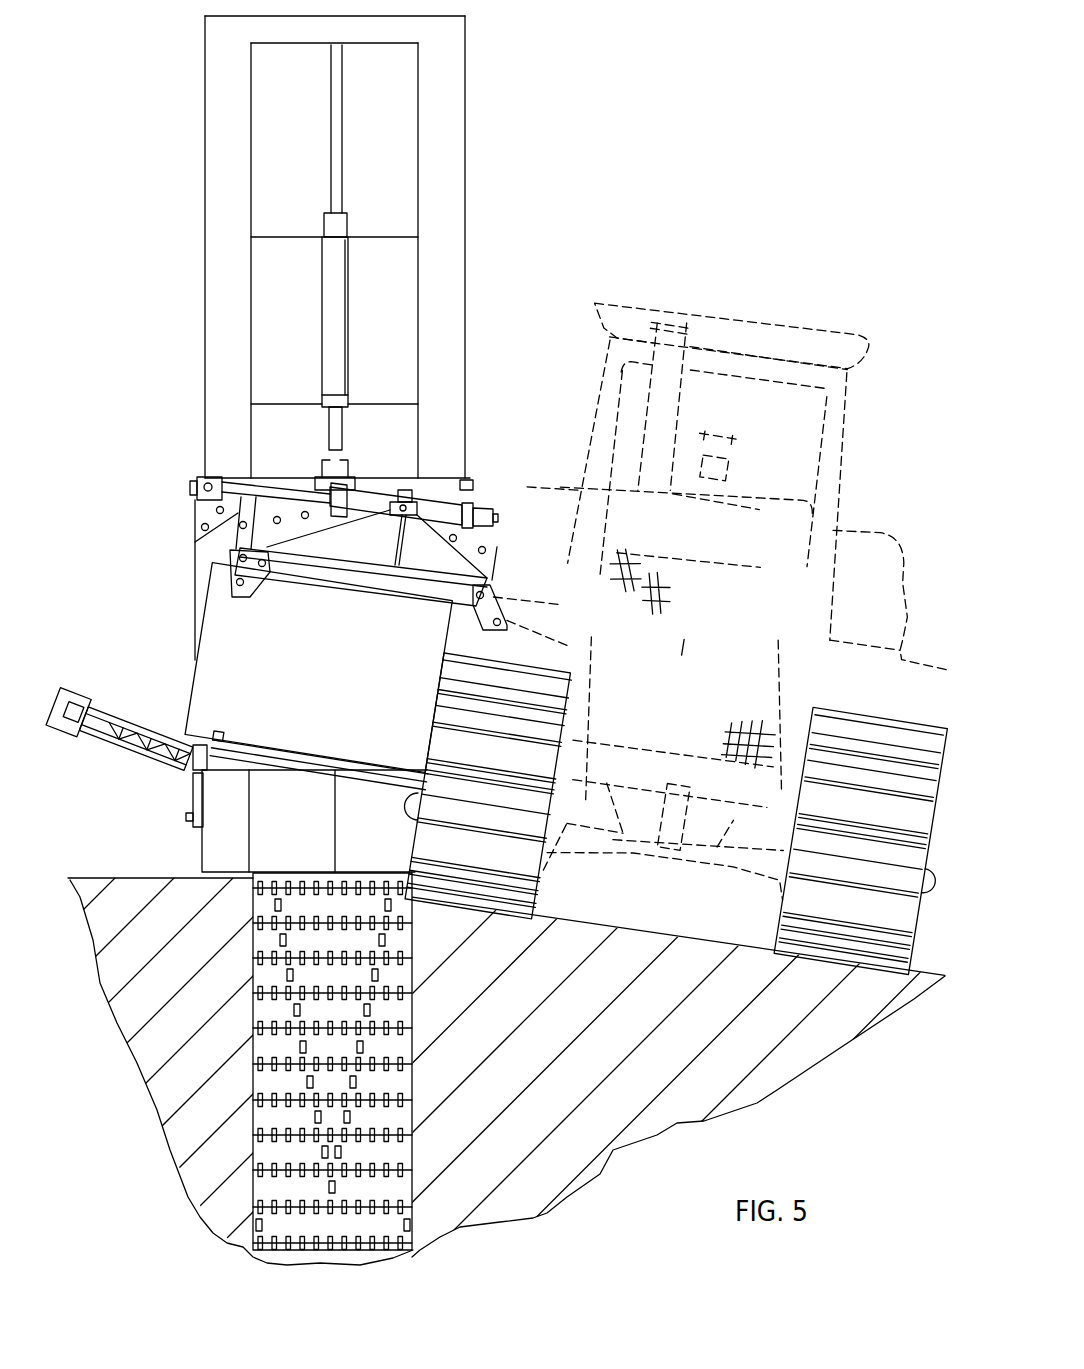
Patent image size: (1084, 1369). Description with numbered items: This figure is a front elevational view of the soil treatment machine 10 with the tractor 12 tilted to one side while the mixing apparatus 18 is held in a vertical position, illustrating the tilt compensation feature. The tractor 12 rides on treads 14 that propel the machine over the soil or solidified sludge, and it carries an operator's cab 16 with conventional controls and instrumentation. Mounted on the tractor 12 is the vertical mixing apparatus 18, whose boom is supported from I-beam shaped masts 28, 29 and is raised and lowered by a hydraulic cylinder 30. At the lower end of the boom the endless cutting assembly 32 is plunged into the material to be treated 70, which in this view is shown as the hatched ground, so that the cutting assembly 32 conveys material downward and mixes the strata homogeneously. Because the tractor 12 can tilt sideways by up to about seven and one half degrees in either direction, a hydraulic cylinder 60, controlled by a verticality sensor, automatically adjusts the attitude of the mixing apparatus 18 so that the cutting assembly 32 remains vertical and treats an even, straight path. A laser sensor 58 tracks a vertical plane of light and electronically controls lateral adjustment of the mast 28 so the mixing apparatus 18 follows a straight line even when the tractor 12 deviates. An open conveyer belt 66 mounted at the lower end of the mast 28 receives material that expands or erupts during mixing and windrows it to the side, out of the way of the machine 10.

The soil treatment machine 10 is at (547, 221).
The tractor 12 is at (902, 548).
The treads 14 is at (535, 896).
The operator's cab 16 is at (850, 460).
The mixing apparatus 18 is at (186, 692).
The mast 28 is at (212, 196).
The mast 29 is at (455, 208).
The hydraulic cylinder 30 is at (347, 258).
The cutting assembly 32 is at (420, 1206).
The laser sensor 58 is at (347, 565).
The hydraulic cylinder 60 is at (452, 505).
The open conveyer belt 66 is at (128, 712).
The material to be treated 70 is at (555, 1050).